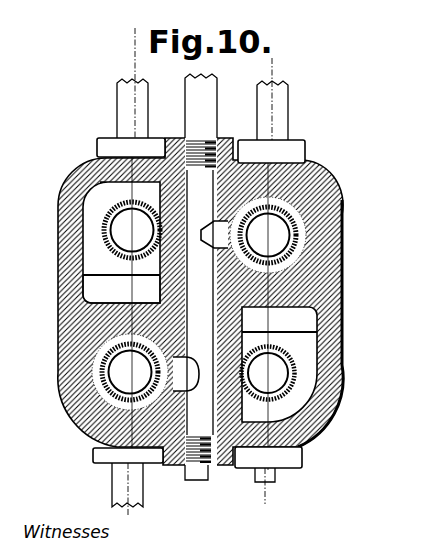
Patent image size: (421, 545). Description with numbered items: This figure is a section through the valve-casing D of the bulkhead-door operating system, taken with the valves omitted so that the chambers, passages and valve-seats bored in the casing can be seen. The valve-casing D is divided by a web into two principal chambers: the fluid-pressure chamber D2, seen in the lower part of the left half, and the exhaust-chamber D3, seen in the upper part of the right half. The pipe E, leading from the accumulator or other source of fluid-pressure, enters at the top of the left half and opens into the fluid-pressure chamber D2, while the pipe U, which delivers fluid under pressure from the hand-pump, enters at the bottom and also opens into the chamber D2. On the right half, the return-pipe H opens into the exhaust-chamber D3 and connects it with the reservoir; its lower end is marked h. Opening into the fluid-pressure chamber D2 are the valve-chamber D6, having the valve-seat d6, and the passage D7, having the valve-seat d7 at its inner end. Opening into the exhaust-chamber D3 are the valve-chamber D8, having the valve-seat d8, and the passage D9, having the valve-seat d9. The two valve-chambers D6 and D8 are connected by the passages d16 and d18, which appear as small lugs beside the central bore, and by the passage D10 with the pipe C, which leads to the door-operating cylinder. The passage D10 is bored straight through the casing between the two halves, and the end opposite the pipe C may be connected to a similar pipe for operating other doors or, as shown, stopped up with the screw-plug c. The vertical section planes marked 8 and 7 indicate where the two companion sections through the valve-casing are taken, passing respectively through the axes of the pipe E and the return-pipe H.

The valve-casing D is at (420, 182).
The passage D7 is at (130, 229).
The fluid-pressure chamber D2 is at (102, 283).
The valve-seat d7 is at (110, 219).
The valve-chamber D6 is at (135, 372).
The valve-seat d6 is at (84, 398).
The valve-chamber D8 is at (290, 215).
The valve-seat d8 is at (308, 218).
The exhaust-chamber D3 is at (298, 318).
The passage D9 is at (272, 373).
The valve-seat d9 is at (296, 394).
The passage d18 is at (211, 229).
The passage d16 is at (188, 379).
The passage D10 is at (212, 292).
The pipe C is at (210, 268).
The screw-plug c is at (202, 481).
The pipe E is at (118, 100).
The return-pipe H is at (280, 128).
The pipe U is at (117, 487).
The lower right stem end h is at (273, 473).
The section plane 8 is at (208, 271).
The section plane 7 is at (268, 282).